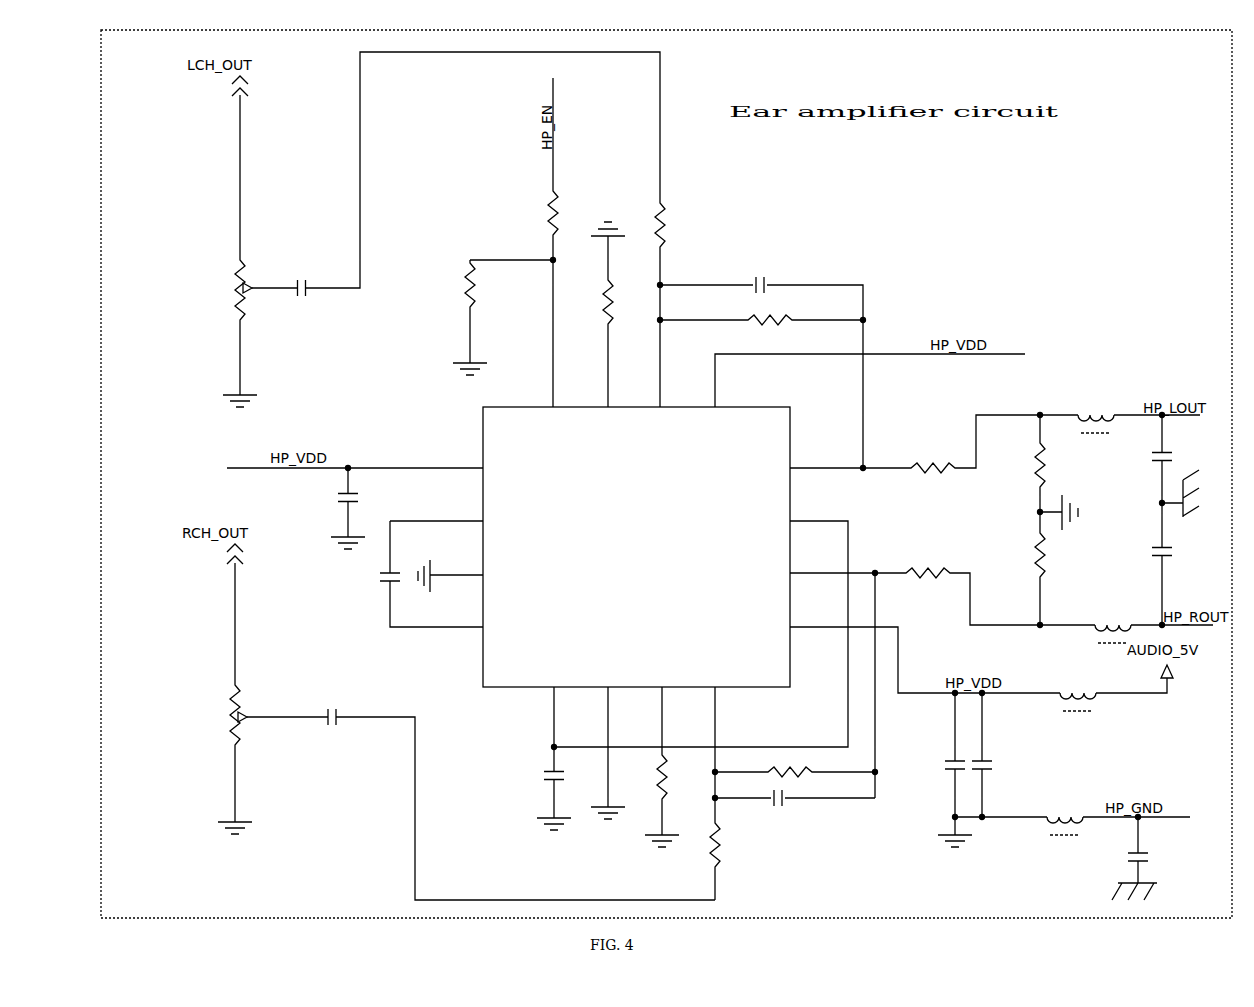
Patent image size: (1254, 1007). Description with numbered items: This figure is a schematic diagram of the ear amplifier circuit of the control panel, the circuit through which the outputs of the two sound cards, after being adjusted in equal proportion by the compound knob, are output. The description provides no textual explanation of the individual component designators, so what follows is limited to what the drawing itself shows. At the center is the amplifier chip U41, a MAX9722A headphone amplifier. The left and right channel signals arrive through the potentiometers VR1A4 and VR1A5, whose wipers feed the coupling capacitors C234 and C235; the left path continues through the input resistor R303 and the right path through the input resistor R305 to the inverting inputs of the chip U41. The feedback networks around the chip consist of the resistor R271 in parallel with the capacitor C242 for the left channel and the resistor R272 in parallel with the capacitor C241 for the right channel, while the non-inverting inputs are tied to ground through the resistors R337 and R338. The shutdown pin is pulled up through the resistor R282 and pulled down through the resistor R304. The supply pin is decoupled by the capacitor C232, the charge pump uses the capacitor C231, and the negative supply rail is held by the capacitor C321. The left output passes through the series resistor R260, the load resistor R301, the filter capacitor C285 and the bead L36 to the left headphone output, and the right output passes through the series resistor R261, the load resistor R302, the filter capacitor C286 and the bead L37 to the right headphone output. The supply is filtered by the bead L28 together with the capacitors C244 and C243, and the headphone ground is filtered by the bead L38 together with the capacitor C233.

The left channel volume potentiometer VR1A4 is at (209, 290).
The right channel volume potentiometer VR1A5 is at (205, 715).
The left input coupling capacitor C234 is at (305, 275).
The right input coupling capacitor C235 is at (335, 704).
The PVDD decoupling capacitor C232 is at (327, 501).
The charge pump capacitor C231 is at (358, 586).
The shutdown pull-up resistor R282 is at (529, 213).
The shutdown pull-down resistor R304 is at (446, 292).
The INL+ bias resistor R337 is at (588, 305).
The left input resistor R303 is at (687, 225).
The left feedback capacitor C242 is at (765, 278).
The left feedback resistor R271 is at (784, 311).
The MAX9722A headphone amplifier IC U41 is at (644, 548).
The left output series resistor R260 is at (926, 458).
The right output series resistor R261 is at (921, 564).
The left output load resistor R301 is at (1017, 465).
The right output load resistor R302 is at (1017, 555).
The left output ferrite bead L36 is at (1082, 397).
The right output ferrite bead L37 is at (1102, 612).
The supply ferrite bead L28 is at (1070, 679).
The ground ferrite bead L38 is at (1055, 803).
The left output filter capacitor C285 is at (1108, 462).
The right output filter capacitor C286 is at (1108, 558).
The supply decoupling capacitor C244 is at (926, 768).
The supply bulk capacitor C243 is at (1042, 749).
The ground filter capacitor C233 is at (1080, 863).
The PVSS capacitor C321 is at (527, 780).
The INR+ bias resistor R338 is at (680, 781).
The right input resistor R305 is at (745, 845).
The right feedback resistor R272 is at (794, 763).
The right feedback capacitor C241 is at (786, 791).